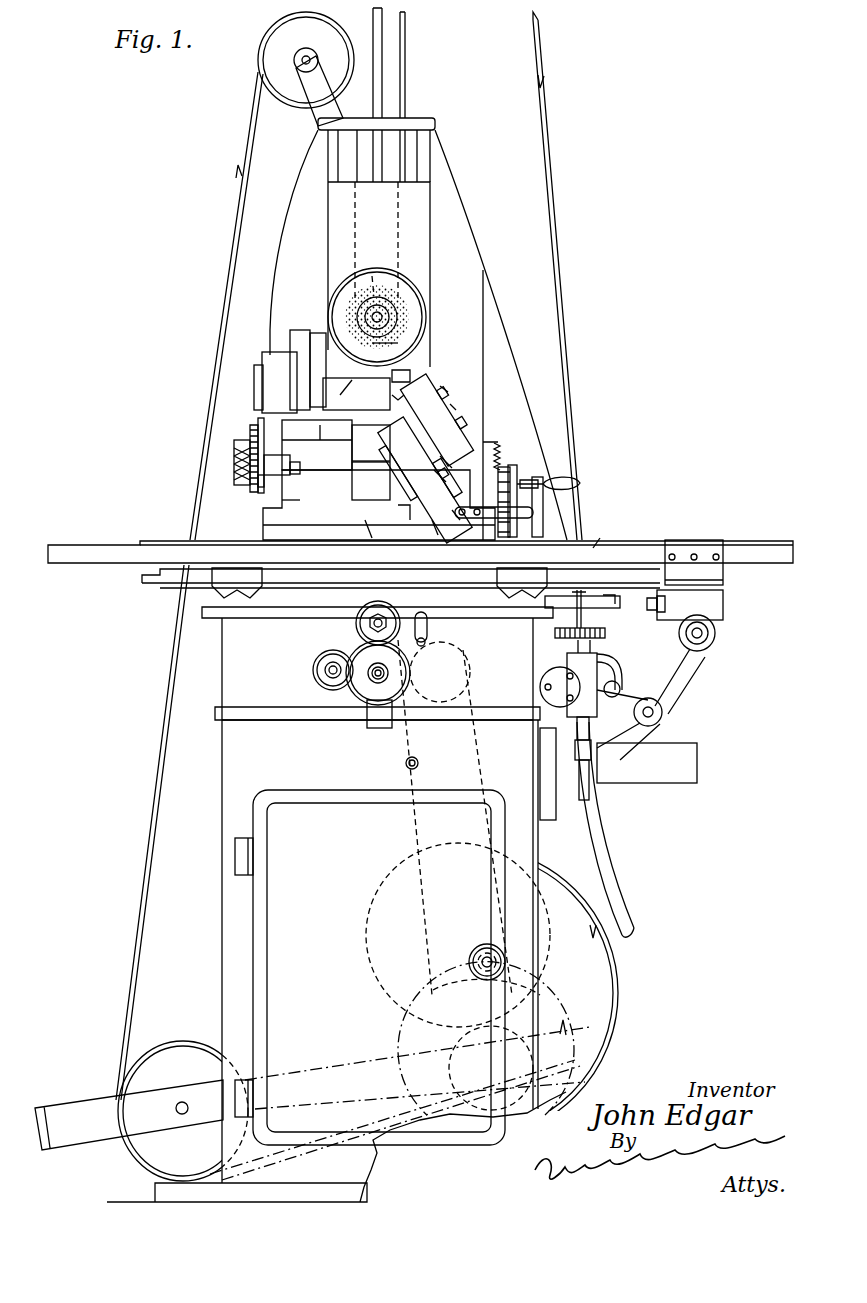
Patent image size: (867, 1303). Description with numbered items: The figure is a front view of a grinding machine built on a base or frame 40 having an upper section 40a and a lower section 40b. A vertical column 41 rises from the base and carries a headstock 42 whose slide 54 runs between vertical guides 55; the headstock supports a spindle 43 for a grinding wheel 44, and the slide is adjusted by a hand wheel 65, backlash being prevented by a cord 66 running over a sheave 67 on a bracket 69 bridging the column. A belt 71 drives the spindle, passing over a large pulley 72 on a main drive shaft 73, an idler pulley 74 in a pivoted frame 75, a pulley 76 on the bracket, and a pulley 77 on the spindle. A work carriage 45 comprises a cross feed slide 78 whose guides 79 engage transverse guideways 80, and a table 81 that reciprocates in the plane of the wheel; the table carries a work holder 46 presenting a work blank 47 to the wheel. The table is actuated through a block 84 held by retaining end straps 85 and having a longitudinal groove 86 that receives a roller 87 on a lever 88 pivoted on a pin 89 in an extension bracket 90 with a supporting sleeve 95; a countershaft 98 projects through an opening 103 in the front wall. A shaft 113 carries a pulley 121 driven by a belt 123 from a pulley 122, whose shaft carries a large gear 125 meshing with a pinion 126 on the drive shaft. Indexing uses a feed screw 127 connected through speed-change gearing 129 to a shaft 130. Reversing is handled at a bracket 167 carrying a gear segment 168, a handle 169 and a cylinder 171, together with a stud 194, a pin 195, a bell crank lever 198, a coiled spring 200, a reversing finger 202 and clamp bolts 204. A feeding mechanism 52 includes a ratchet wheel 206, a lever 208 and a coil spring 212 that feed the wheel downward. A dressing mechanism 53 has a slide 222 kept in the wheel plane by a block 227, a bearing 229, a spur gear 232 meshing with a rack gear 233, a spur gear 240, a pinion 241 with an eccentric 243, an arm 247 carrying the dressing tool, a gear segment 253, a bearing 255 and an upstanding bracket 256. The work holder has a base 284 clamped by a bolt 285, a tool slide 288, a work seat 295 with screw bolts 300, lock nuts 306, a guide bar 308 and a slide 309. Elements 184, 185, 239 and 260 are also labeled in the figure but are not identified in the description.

The base or frame 40 is at (336, 910).
The upper section of the base 40a is at (377, 697).
The lower section of the base 40b is at (377, 743).
The vertical column 41 is at (477, 338).
The headstock 42 is at (418, 275).
The spindle 43 is at (385, 317).
The grinding wheel 44 is at (405, 300).
The work carriage 45 is at (604, 546).
The work holder 46 is at (448, 448).
The work blank 47 is at (425, 385).
The feeding mechanism 52 is at (526, 480).
The dressing mechanism 53 is at (255, 515).
The slide 54 is at (418, 205).
The vertical guides 55 is at (340, 145).
The hand wheel 65 is at (540, 506).
The cord 66 is at (375, 162).
The sheave 67 is at (372, 22).
The bracket 69 is at (425, 118).
The belt 71 is at (228, 240).
The large pulley 72 is at (552, 858).
The main drive shaft 73 is at (480, 950).
The idler pulley 74 is at (178, 1052).
The frame 75 is at (88, 1108).
The pulley 76 is at (263, 45).
The pulley 77 is at (390, 272).
The cross feed slide 78 is at (140, 580).
The parallel guides 79 is at (214, 577).
The transverse guideways 80 is at (258, 602).
The table 81 is at (118, 550).
The block 84 is at (725, 598).
The retaining end straps 85 is at (712, 545).
The longitudinal groove 86 is at (715, 622).
The roller 87 is at (736, 642).
The lever 88 is at (720, 668).
The pin 89 is at (655, 712).
The extension bracket 90 is at (648, 728).
The supporting sleeve 95 is at (697, 766).
The countershaft 98 is at (420, 766).
The opening 103 is at (418, 758).
The shaft 113 is at (470, 652).
The pulley 121 is at (470, 720).
The pulley 122 is at (482, 985).
The belt 123 is at (410, 842).
The large gear 125 is at (570, 1060).
The pinion 126 is at (478, 958).
The feed screw 127 is at (368, 626).
The speed-change gearing 129 is at (352, 693).
The shaft 130 is at (320, 670).
The bracket 167 is at (542, 666).
The gear segment 168 is at (548, 684).
The handle 169 is at (618, 660).
The cylinder 171 is at (620, 686).
The rod 184 is at (578, 720).
The hose 185 is at (603, 882).
The stud 194 is at (578, 600).
The pin 195 is at (612, 604).
The bell crank lever 198 is at (606, 632).
The coiled spring 200 is at (444, 539).
The reversing finger 202 is at (700, 650).
The clamp bolts 204 is at (678, 598).
The ratchet wheel 206 is at (508, 476).
The lever 208 is at (552, 480).
The coil spring 212 is at (498, 446).
The slide 222 is at (319, 447).
The block 227 is at (374, 481).
The bearing 229 is at (262, 466).
The spur gear 232 is at (300, 468).
The rack gear 233 is at (380, 376).
The knob 239 is at (234, 448).
The spur gear 240 is at (255, 487).
The pinion 241 is at (258, 428).
The eccentric 243 is at (250, 430).
The arm 247 is at (374, 441).
The gear segment 253 is at (255, 365).
The bearing 255 is at (273, 360).
The upstanding bracket 256 is at (299, 330).
The guard 260 is at (394, 350).
The base 284 is at (405, 532).
The bolt 285 is at (372, 538).
The tool slide 288 is at (445, 458).
The work seat 295 is at (452, 402).
The screw bolts 300 is at (443, 382).
The lock nuts 306 is at (440, 468).
The guide bar 308 is at (455, 522).
The slide 309 is at (438, 535).